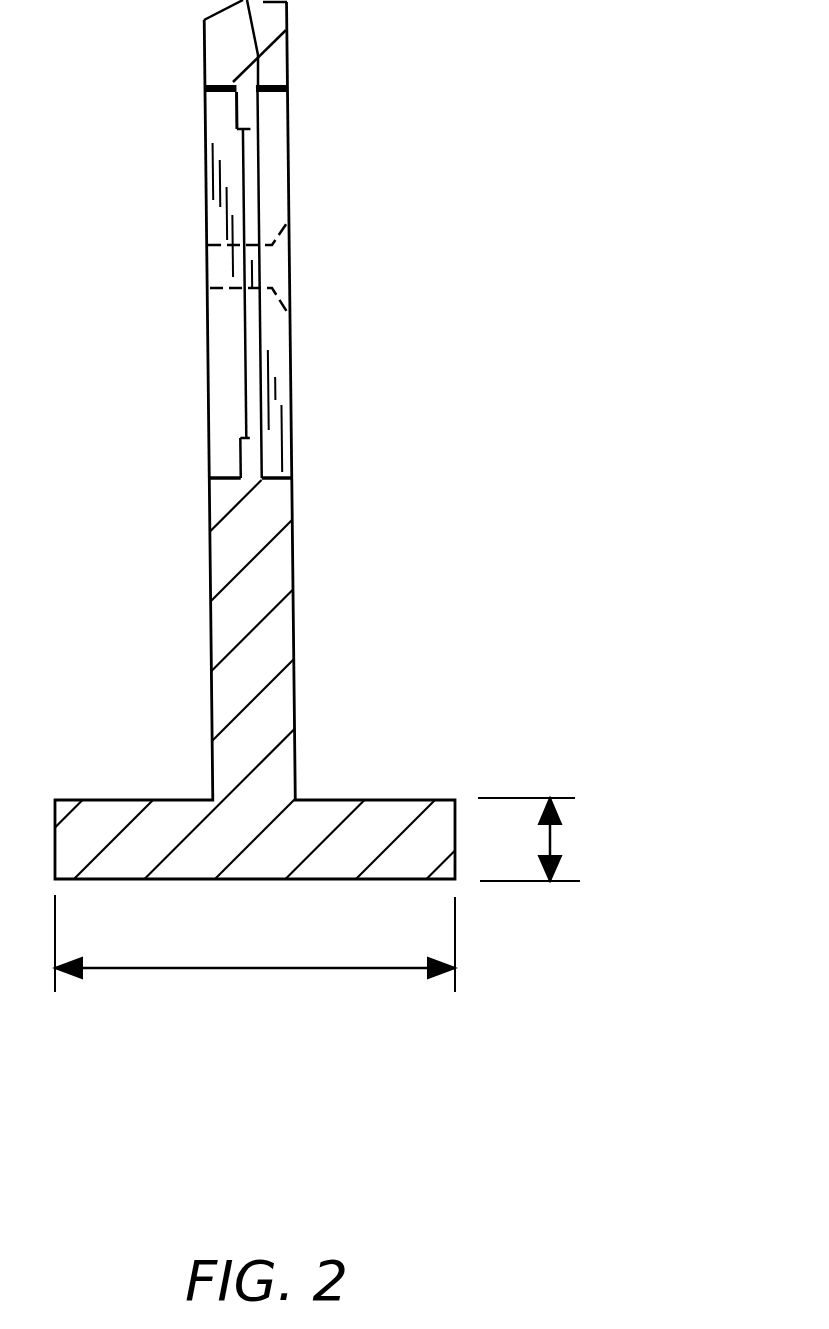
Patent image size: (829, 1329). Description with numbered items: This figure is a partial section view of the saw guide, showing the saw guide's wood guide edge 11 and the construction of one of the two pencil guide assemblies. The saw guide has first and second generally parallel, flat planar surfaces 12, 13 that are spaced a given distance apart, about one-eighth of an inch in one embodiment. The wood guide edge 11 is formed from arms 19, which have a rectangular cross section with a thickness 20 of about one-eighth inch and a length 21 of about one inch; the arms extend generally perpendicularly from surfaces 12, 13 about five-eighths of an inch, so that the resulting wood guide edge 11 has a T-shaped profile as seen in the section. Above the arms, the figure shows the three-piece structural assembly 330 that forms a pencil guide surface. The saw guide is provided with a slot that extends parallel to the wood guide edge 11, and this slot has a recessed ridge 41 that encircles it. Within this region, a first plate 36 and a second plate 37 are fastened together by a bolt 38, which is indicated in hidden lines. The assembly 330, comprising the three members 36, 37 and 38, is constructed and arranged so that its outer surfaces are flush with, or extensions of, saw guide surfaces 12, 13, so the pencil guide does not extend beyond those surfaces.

The wood guide edge 11 is at (528, 965).
The first planar surface 12 is at (205, 57).
The second planar surface 13 is at (287, 43).
The arms 19 is at (347, 797).
The thickness 20 is at (552, 842).
The length 21 is at (228, 972).
The first plate 36 is at (288, 357).
The second plate 37 is at (208, 418).
The bolt 38 is at (225, 290).
The recessed ridge 41 is at (247, 108).
The structural assembly 330 is at (382, 263).